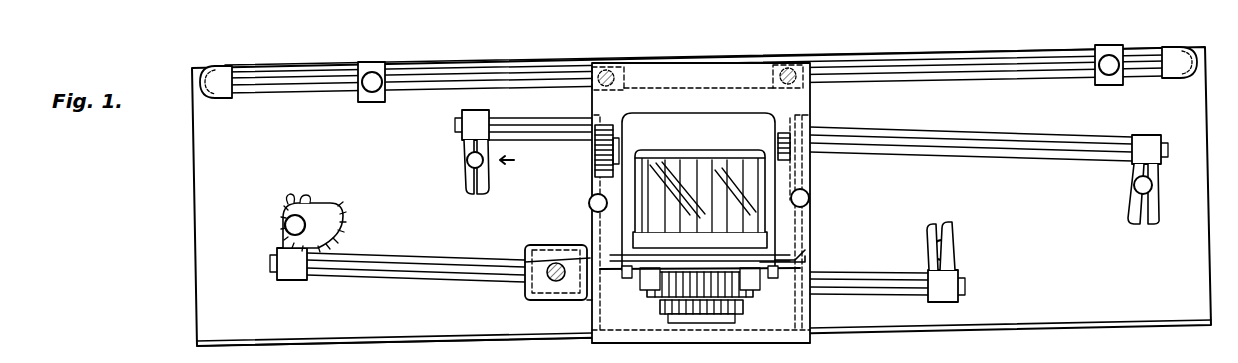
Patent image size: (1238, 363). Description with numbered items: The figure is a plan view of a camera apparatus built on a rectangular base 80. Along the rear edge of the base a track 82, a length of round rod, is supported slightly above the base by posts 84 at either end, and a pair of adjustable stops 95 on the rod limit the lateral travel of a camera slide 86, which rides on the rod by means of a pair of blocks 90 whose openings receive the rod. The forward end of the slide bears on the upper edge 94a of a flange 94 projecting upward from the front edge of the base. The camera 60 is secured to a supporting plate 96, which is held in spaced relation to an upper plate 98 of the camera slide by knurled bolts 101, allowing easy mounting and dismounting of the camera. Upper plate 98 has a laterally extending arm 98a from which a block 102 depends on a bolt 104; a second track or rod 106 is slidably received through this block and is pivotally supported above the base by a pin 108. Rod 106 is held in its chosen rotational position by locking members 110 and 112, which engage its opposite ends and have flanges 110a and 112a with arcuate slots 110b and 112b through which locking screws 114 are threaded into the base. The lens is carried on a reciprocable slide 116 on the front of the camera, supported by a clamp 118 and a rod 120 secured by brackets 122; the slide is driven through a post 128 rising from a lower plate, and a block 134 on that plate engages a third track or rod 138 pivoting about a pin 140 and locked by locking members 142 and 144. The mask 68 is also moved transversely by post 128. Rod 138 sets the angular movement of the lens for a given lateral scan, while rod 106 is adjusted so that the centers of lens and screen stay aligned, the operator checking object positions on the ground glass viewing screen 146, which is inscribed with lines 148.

The camera 60 is at (688, 112).
The mask 68 is at (690, 325).
The rectangular base 80 is at (196, 185).
The track 82 is at (448, 78).
The posts 84 is at (220, 87).
The camera slide 86 is at (868, 105).
The blocks 90 is at (594, 92).
The flange 94 is at (212, 350).
The upper edge 94a is at (373, 336).
The adjustable stops 95 is at (358, 96).
The supporting plate 96 is at (805, 180).
The upper plate 98 is at (598, 340).
The laterally extending arm 98a is at (524, 284).
The knurled bolts 101 is at (592, 205).
The block 102 is at (530, 255).
The bolt 104 is at (560, 290).
The second track or rod 106 is at (398, 262).
The pin 108 is at (552, 262).
The locking member 110 is at (950, 292).
The flange 110a is at (955, 232).
The clamp jaw 110b is at (934, 222).
The locking member 112 is at (290, 278).
The flange 112a is at (290, 202).
The arcuate slot 112b is at (306, 202).
The locking screws 114 is at (283, 224).
The reciprocable slide 116 is at (800, 262).
The clamp 118 is at (792, 250).
The rod 120 is at (756, 285).
The brackets 122 is at (624, 280).
The post 128 is at (690, 298).
The block 134 is at (805, 112).
The third track or rod 138 is at (536, 128).
The pin 140 is at (752, 120).
The locking member 142 is at (1160, 172).
The locking member 144 is at (460, 150).
The ground glass viewing screen 146 is at (700, 175).
The lines 148 is at (682, 165).